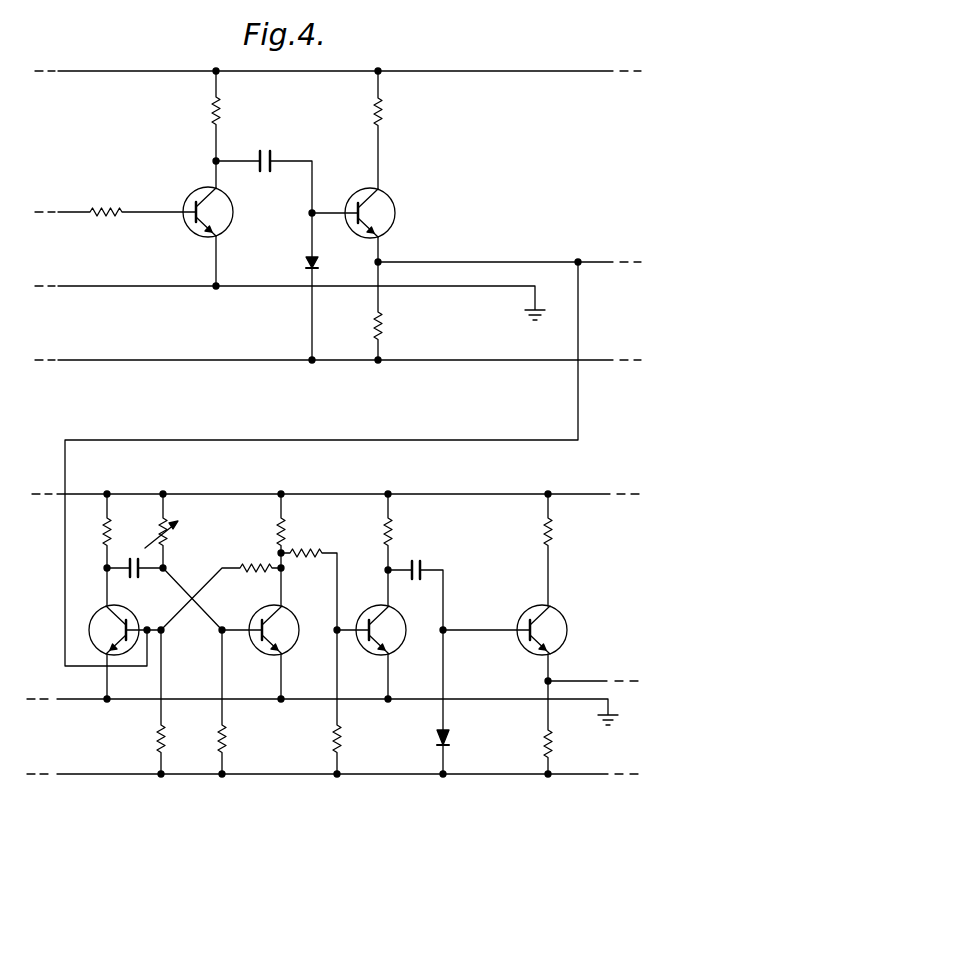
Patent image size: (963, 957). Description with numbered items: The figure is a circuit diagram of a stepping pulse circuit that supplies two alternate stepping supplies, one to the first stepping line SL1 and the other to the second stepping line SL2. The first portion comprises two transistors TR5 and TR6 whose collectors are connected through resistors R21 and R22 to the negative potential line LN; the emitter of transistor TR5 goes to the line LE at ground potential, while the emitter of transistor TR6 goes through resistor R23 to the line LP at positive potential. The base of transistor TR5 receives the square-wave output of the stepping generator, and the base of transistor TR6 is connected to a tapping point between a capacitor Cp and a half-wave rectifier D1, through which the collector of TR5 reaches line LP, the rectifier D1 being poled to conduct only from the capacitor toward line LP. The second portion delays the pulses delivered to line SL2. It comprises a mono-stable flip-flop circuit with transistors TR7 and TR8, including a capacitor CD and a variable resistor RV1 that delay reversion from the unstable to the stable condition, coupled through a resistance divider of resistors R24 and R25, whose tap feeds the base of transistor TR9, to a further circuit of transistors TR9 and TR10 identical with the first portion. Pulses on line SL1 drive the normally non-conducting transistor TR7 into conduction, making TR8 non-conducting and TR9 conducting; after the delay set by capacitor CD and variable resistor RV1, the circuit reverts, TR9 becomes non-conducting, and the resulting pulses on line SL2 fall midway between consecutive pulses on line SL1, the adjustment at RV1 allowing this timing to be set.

The negative potential line LN is at (336, 282).
The line at ground potential LE is at (322, 505).
The line at positive potential LP is at (334, 580).
The first stepping line SL1 is at (509, 252).
The second stepping line SL2 is at (591, 670).
The resistor R21 is at (210, 114).
The resistor R22 is at (399, 128).
The resistor R23 is at (398, 312).
The resistor of resistance divider circuit R24 is at (309, 579).
The resistor of resistance divider circuit R25 is at (334, 739).
The variable resistor RV1 is at (178, 531).
The capacitor Cp is at (331, 390).
The capacitor CD is at (135, 580).
The half-wave rectifier D1 is at (315, 259).
The transistor TR5 is at (198, 196).
The transistor TR6 is at (374, 226).
The transistor TR7 is at (105, 608).
The transistor TR8 is at (266, 608).
The transistor TR9 is at (366, 652).
The transistor TR10 is at (530, 614).